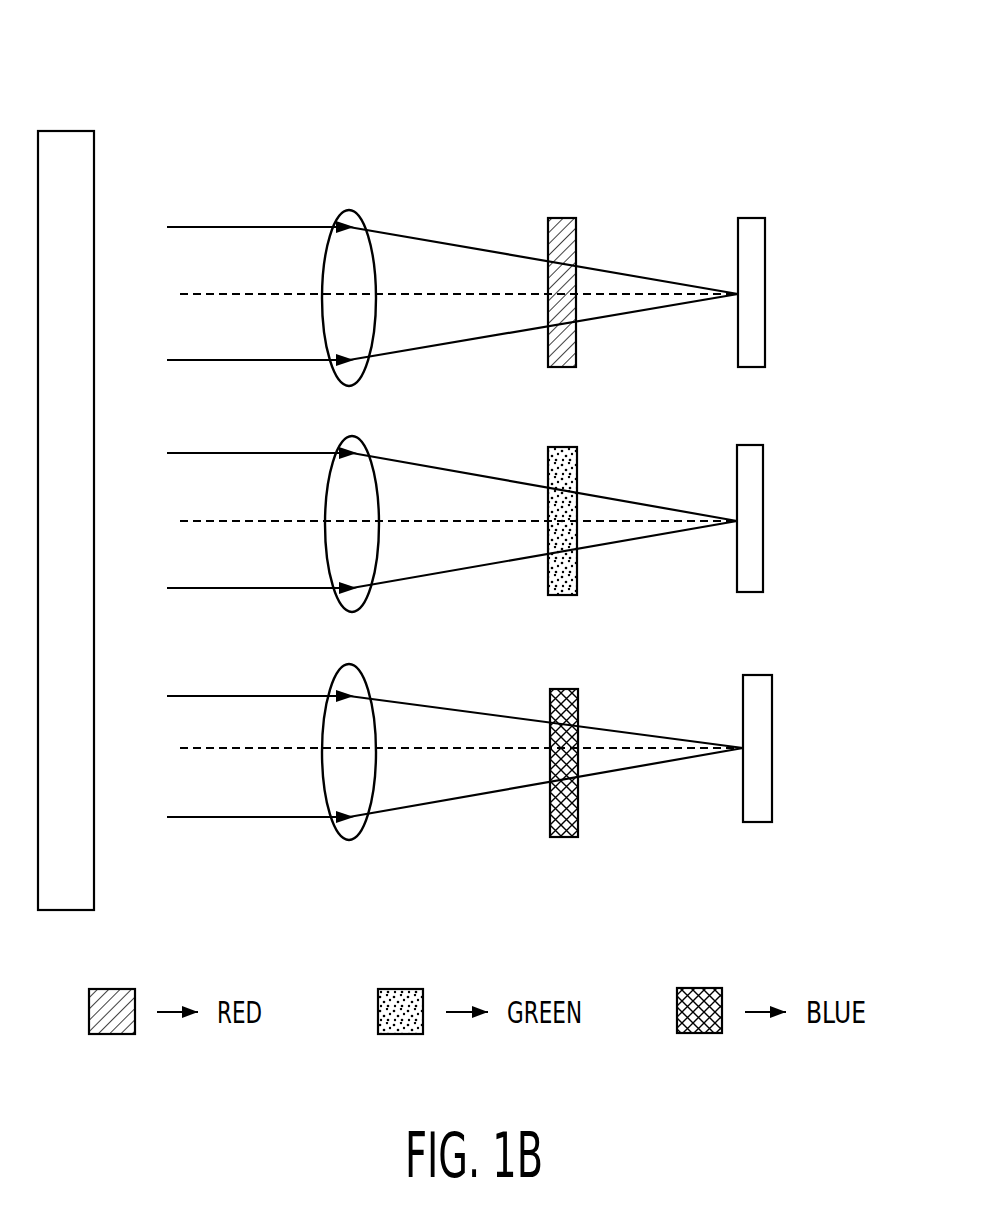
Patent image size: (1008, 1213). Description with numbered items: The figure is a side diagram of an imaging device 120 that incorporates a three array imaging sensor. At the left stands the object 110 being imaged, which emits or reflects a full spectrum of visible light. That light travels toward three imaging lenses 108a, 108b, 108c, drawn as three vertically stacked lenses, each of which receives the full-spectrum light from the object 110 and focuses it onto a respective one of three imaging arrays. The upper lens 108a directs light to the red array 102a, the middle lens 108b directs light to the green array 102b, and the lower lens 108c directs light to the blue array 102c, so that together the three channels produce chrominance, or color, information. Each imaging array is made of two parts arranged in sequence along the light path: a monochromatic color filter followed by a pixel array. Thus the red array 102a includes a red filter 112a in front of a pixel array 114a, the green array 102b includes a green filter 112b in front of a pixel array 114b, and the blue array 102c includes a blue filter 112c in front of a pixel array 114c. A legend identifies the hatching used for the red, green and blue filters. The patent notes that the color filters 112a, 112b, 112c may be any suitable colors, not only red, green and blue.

The object 110 is at (63, 131).
The imaging device 120 is at (507, 126).
The imaging lens 108a is at (355, 212).
The imaging lens 108b is at (350, 438).
The imaging lens 108c is at (368, 675).
The red array 102a is at (750, 172).
The green array 102b is at (750, 430).
The blue array 102c is at (750, 846).
The red filter 112a is at (578, 240).
The green filter 112b is at (547, 470).
The blue filter 112c is at (579, 701).
The pixel array 114a is at (767, 262).
The pixel array 114b is at (765, 558).
The pixel array 114c is at (774, 703).